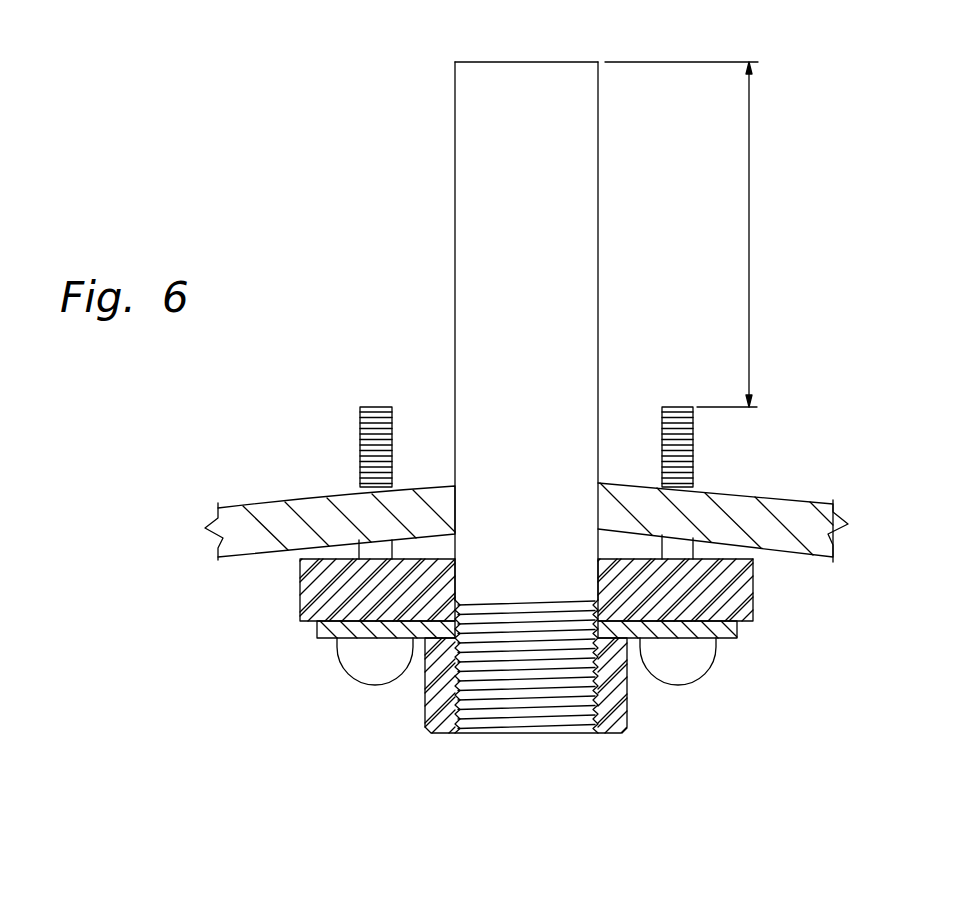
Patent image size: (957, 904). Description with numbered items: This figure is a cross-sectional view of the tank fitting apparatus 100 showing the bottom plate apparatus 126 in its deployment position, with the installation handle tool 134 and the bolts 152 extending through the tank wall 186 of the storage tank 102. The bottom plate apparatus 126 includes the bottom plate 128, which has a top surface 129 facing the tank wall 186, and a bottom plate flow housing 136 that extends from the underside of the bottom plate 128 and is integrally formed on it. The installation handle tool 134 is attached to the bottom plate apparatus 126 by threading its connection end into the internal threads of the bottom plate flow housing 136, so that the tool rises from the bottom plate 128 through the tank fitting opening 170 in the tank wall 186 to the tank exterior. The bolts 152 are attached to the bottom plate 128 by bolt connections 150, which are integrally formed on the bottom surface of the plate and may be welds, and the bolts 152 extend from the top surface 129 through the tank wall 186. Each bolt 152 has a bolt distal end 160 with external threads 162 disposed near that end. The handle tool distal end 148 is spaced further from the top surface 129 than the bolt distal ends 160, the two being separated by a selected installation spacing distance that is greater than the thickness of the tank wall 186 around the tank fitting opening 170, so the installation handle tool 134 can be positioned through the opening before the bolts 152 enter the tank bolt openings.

The tank fitting apparatus 100 is at (298, 213).
The storage tank 102 is at (748, 489).
The bottom plate apparatus 126 is at (540, 675).
The bottom plate 128 is at (325, 640).
The top surface 129 is at (350, 622).
The installation handle tool 134 is at (490, 305).
The bottom plate flow housing 136 is at (612, 735).
The handle tool distal end 148 is at (527, 62).
The bolt connections 150 is at (372, 686).
The bolts 152 is at (360, 548).
The bolt distal end 160 is at (491, 420).
The external threads 162 is at (360, 411).
The tank fitting opening 170 is at (606, 476).
The tank wall 186 is at (268, 500).